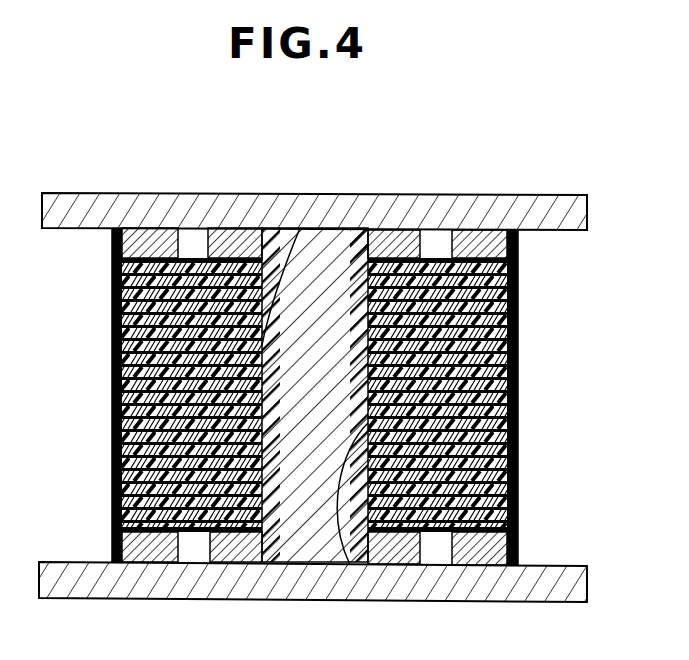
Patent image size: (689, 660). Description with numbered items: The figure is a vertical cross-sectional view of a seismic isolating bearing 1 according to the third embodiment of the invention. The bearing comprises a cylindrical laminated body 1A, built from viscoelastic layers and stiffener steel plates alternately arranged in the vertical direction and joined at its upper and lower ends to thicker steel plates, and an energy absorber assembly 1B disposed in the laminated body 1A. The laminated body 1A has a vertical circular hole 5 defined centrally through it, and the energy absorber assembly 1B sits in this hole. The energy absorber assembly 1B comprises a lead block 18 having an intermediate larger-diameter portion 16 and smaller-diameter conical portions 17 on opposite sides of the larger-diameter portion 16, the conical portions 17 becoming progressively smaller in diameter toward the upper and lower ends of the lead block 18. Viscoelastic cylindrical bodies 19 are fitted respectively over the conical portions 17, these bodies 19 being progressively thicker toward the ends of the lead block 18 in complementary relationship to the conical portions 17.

The seismic isolating bearing 1 is at (554, 185).
The laminated body 1A is at (530, 381).
The energy absorber assembly 1B is at (357, 212).
The vertical circular hole 5 is at (350, 565).
The intermediate larger-diameter portion 16 is at (116, 381).
The smaller-diameter conical portions 17 is at (313, 252).
The lead block 18 is at (283, 300).
The viscoelastic cylindrical bodies 19 is at (368, 229).